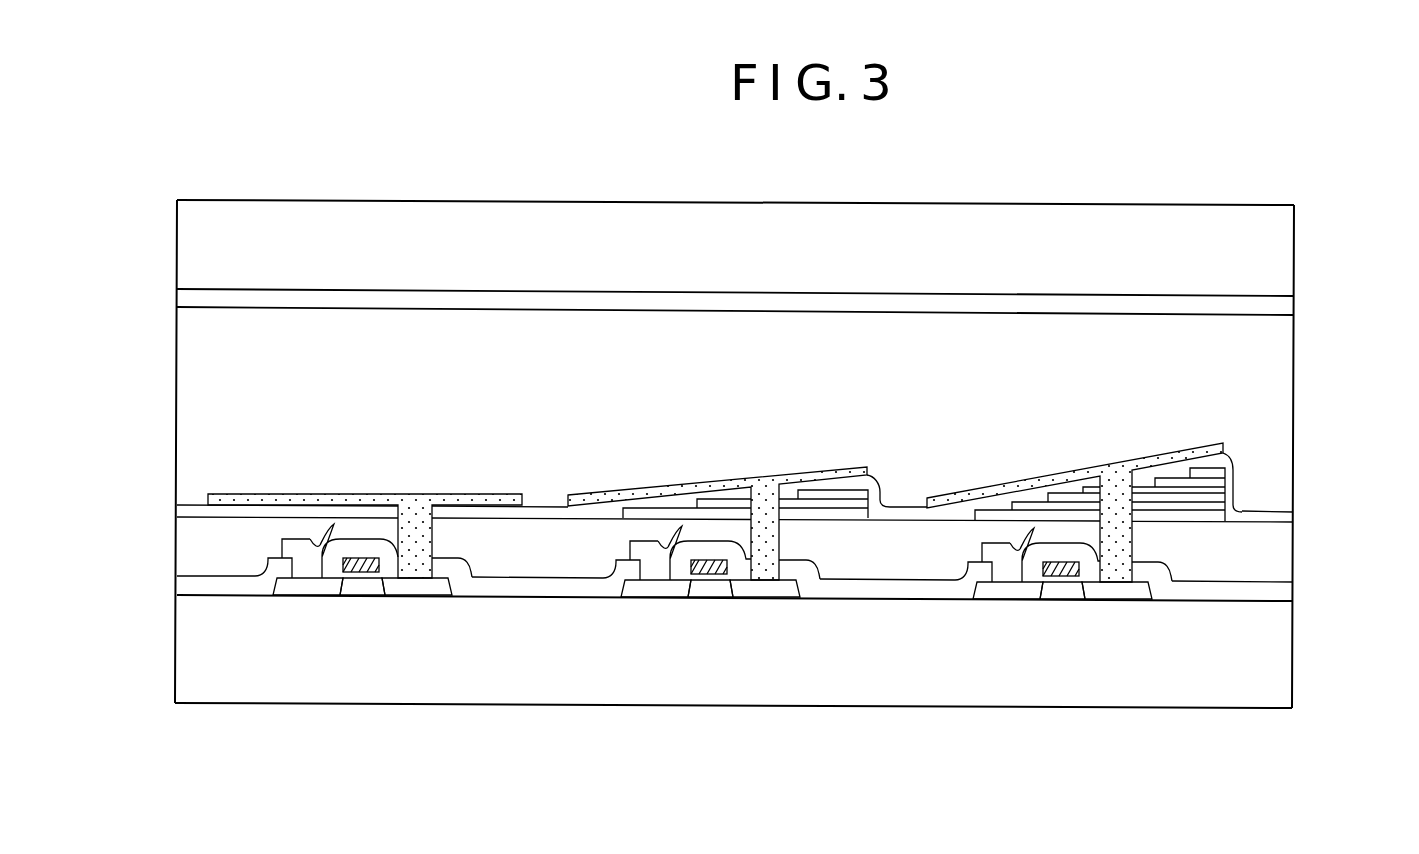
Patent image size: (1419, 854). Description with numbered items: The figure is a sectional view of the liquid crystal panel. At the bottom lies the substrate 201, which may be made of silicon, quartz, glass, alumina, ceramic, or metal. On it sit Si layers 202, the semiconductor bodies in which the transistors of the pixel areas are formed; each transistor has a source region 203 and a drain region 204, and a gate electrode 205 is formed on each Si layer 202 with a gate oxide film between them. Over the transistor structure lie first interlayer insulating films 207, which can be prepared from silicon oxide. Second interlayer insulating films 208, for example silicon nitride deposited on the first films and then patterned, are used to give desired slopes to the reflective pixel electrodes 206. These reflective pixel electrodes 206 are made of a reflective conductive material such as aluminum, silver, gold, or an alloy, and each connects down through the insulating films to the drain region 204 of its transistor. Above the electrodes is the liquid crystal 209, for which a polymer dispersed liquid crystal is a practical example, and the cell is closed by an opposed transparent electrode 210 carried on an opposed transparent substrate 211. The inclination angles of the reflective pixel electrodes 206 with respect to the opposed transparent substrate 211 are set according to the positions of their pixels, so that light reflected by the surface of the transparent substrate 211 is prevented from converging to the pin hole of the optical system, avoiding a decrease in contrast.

The substrate 201 is at (1058, 690).
The Si layer 202 is at (367, 592).
The source region 203 is at (293, 587).
The drain region 204 is at (427, 593).
The gate electrode 205 is at (362, 570).
The reflective pixel electrode 206 is at (227, 493).
The first interlayer insulating film 207 is at (1278, 538).
The second interlayer insulating film 208 is at (1190, 500).
The liquid crystal 209 is at (1277, 373).
The opposed transparent electrode 210 is at (1285, 307).
The opposed transparent substrate 211 is at (1277, 253).